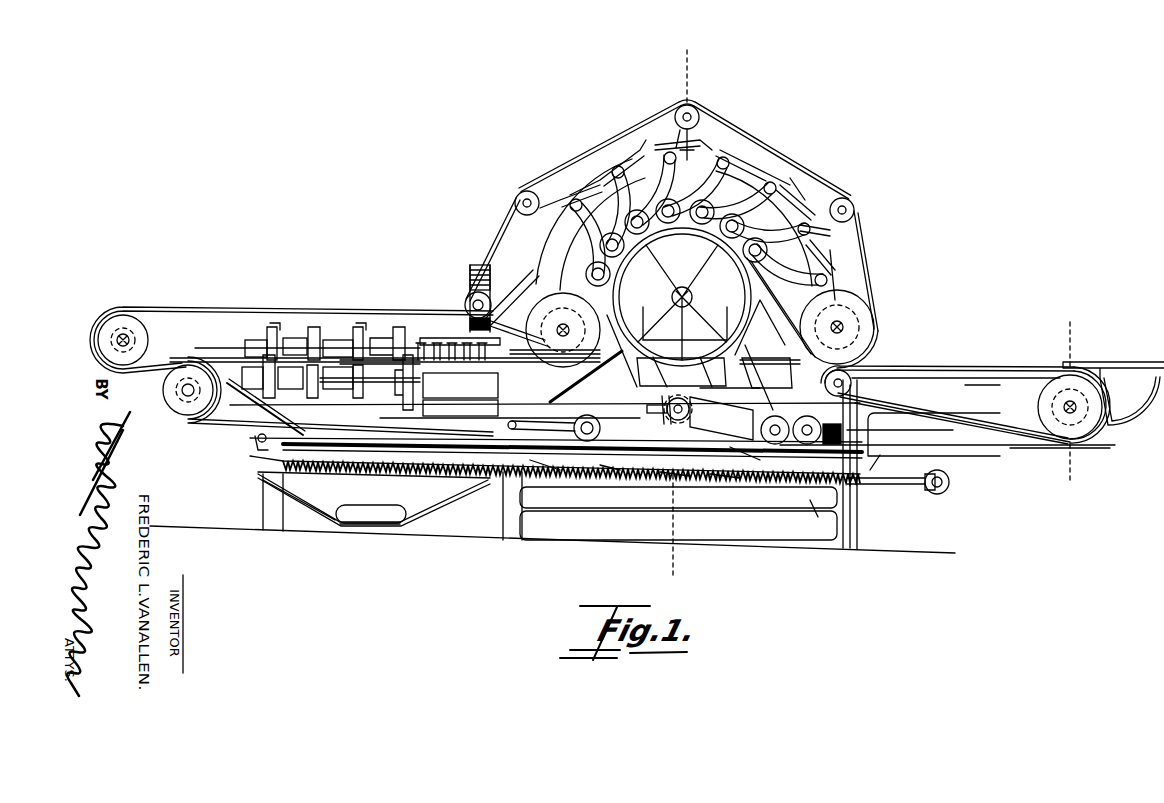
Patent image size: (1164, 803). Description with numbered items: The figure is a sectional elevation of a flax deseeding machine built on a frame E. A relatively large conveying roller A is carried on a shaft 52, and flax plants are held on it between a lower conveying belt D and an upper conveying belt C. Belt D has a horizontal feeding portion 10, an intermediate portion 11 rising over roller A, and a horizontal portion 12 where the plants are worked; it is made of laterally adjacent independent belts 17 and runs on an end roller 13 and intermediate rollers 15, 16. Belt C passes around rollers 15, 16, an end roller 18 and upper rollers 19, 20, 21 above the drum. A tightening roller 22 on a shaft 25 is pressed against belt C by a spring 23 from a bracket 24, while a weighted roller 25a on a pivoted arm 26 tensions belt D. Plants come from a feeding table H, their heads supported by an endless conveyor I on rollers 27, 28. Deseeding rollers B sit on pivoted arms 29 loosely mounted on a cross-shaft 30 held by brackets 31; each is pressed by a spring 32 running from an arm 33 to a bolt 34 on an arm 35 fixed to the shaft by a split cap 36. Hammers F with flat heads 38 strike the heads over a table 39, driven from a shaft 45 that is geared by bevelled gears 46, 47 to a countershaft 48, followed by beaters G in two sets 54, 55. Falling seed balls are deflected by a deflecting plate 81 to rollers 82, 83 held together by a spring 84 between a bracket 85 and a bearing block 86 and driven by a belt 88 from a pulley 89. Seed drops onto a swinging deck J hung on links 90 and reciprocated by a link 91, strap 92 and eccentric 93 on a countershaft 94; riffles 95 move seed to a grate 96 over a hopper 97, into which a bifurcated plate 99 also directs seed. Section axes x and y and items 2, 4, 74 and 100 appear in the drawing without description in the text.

The delivery conveyor pulley 2 is at (1077, 408).
The frame member 4 is at (722, 472).
The feeding portion 10 is at (975, 367).
The intermediate portion 11 is at (762, 305).
The horizontally extending portion 12 is at (352, 382).
The end roller 13 is at (191, 420).
The intermediate roller 15 is at (563, 300).
The intermediate roller 16 is at (866, 315).
The laterally adjacent belts 17 is at (922, 367).
The end roller 18 is at (137, 318).
The upper roller 19 is at (527, 190).
The upper roller 20 is at (685, 107).
The upper roller 21 is at (856, 208).
The roller 22 is at (470, 298).
The spring 23 is at (482, 292).
The bracket 24 is at (478, 265).
The shaft 25 is at (496, 312).
The weighted roller 25a is at (672, 362).
The pivoted arm 26 is at (572, 476).
The roller 27 is at (852, 372).
The roller 28 is at (1050, 370).
The pivoted arm 29 is at (770, 170).
The cross-shaft 30 is at (835, 276).
The brackets 31 is at (780, 190).
The spring 32 is at (650, 142).
The arm 33 is at (670, 140).
The bolt 34 is at (747, 157).
The arm 35 is at (590, 177).
The split cap 36 is at (832, 231).
The flat head 38 is at (455, 378).
The table 39 is at (455, 402).
The shaft 45 is at (535, 362).
The bevelled gear 46 is at (668, 424).
The bevelled gear 47 is at (706, 388).
The countershaft 48 is at (716, 415).
The shaft 52 is at (696, 291).
The beaters 54 is at (273, 328).
The beaters 55 is at (256, 340).
The lower rail 74 is at (1100, 441).
The deflecting plate 81 is at (754, 388).
The roller 82 is at (775, 445).
The roller 83 is at (800, 446).
The spring 84 is at (817, 517).
The bracket 85 is at (872, 430).
The bearing block 86 is at (828, 448).
The belt 88 is at (718, 481).
The pulley 89 is at (672, 480).
The links 90 is at (257, 440).
The link 91 is at (905, 492).
The strap 92 is at (943, 492).
The eccentric 93 is at (948, 478).
The countershaft 94 is at (950, 486).
The riffles 95 is at (614, 476).
The grate 96 is at (325, 490).
The hopper 97 is at (340, 515).
The bifurcated plate 99 is at (286, 412).
The lever bar 100 is at (592, 386).
The conveying roller A is at (752, 362).
The deseeding rollers B is at (766, 262).
The conveying belt C is at (415, 318).
The conveying belt D is at (413, 402).
The frame E is at (601, 429).
The hammers F is at (455, 340).
The beaters G is at (296, 338).
The feeding table H is at (1110, 360).
The endless conveyor I is at (975, 386).
The swinging deck J is at (645, 480).
The axis x is at (681, 317).
The axis y is at (1070, 397).